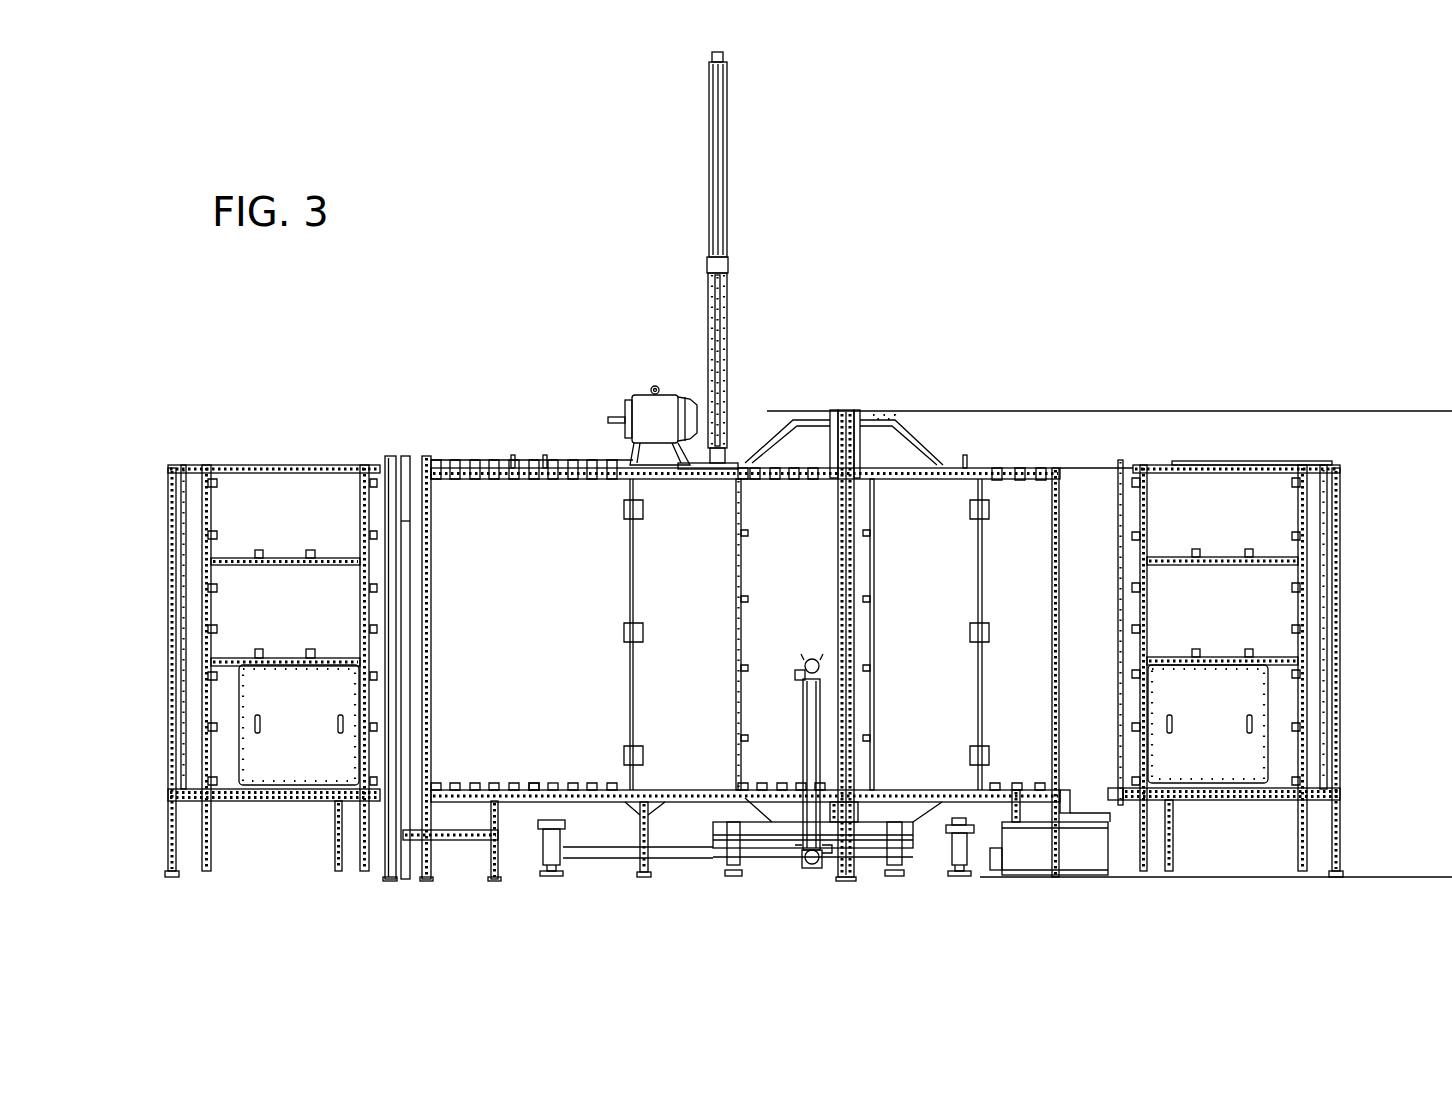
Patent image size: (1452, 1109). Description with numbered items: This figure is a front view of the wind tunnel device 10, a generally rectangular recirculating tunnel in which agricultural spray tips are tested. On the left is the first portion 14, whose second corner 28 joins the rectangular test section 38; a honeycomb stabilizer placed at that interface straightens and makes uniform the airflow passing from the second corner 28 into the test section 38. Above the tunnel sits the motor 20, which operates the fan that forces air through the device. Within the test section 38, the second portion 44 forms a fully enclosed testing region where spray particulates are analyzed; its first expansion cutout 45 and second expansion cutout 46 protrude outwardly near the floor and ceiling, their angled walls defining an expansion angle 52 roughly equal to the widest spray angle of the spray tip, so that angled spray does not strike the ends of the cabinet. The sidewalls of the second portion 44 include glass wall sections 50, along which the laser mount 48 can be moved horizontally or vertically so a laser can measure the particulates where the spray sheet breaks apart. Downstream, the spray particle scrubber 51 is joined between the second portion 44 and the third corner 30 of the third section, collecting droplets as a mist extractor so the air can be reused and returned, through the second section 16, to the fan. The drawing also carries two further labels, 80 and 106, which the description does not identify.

The wind tunnel device 10 is at (1032, 188).
The first portion 14 is at (154, 576).
The second section 16 is at (555, 377).
The motor 20 is at (641, 393).
The second corner 28 is at (262, 803).
The third corner 30 is at (553, 781).
The test section 38 is at (554, 767).
The second portion 44 is at (902, 636).
The first expansion cutout 45 is at (868, 417).
The second expansion cutout 46 is at (922, 825).
The laser mount 48 is at (812, 814).
The glass wall sections 50 is at (758, 760).
The spray particle scrubber 51 is at (1095, 772).
The expansion angle 52 is at (770, 463).
The mast height 80 is at (735, 52).
The overall height 106 is at (1410, 411).